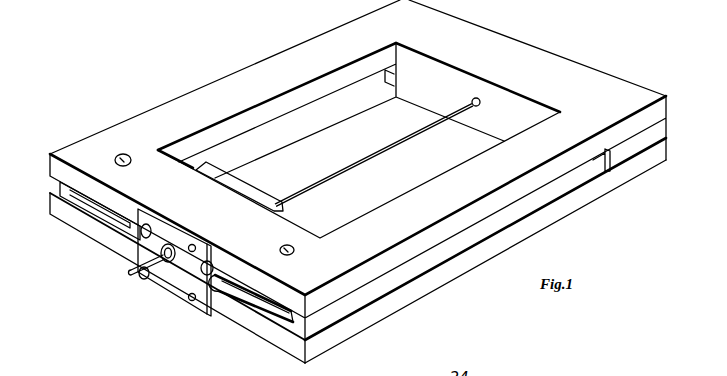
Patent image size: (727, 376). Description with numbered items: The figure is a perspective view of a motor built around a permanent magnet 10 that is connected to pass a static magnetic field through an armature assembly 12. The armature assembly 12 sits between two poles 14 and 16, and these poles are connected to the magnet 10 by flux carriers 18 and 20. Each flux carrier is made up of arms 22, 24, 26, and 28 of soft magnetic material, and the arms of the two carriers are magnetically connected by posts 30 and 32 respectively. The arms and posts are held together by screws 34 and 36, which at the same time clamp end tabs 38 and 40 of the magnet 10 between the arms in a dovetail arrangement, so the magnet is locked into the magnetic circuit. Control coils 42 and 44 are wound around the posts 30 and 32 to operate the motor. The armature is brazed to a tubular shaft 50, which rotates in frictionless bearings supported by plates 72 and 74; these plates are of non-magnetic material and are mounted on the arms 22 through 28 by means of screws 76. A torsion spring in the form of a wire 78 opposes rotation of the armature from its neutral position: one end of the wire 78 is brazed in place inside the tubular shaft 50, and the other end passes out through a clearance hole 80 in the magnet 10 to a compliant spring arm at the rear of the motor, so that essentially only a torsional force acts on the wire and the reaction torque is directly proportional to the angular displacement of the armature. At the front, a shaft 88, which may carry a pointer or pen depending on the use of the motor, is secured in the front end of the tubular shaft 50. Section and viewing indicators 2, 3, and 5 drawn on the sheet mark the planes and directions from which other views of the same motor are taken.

The permanent magnet 10 is at (505, 52).
The armature assembly 12 is at (190, 313).
The pole 14 is at (120, 259).
The pole 16 is at (218, 318).
The flux carrier 18 is at (208, 78).
The flux carrier 20 is at (590, 213).
The arm 22 is at (266, 72).
The arm 24 is at (327, 118).
The arm 26 is at (434, 180).
The arm 28 is at (487, 262).
The post 30 is at (108, 212).
The post 32 is at (274, 305).
The screw 34 is at (123, 154).
The screw 36 is at (296, 246).
The end tab 38 is at (387, 76).
The end tab 40 is at (637, 143).
The control coil 42 is at (55, 195).
The control coil 44 is at (288, 318).
The shaft 50 is at (163, 263).
The plate 72 is at (170, 292).
The plate 74 is at (270, 198).
The screw 76 is at (150, 226).
The wire 78 is at (383, 153).
The clearance hole 80 is at (477, 98).
The shaft 88 is at (138, 270).
The section line 2 is at (33, 293).
The section line 3 is at (35, 195).
The section line 5 is at (100, 100).